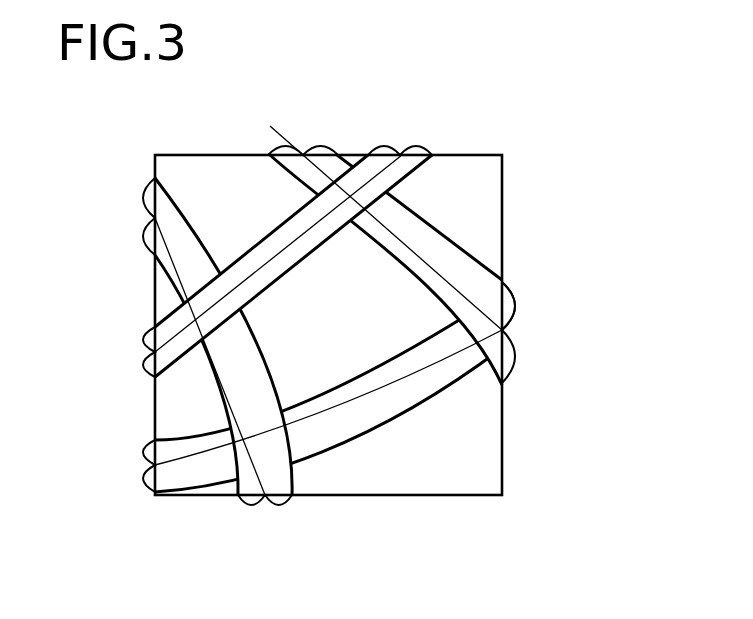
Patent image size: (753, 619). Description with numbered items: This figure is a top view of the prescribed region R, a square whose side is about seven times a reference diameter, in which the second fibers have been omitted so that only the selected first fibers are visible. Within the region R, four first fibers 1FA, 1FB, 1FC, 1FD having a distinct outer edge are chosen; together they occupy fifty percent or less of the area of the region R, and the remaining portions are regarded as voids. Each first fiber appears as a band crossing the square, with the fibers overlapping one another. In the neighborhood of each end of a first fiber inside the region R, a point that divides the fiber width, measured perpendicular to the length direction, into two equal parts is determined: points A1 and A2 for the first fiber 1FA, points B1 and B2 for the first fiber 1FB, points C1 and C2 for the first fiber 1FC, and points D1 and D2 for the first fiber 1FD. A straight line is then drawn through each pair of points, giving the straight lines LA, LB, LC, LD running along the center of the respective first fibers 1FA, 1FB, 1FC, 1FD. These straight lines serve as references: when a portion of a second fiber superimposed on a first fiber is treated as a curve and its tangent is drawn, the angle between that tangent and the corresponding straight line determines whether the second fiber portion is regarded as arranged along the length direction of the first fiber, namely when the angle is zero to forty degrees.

The prescribed region R is at (340, 126).
The first fiber 1FA is at (445, 246).
The first fiber 1FB is at (264, 247).
The first fiber 1FC is at (282, 480).
The first fiber 1FD is at (402, 395).
The straight line LA is at (502, 330).
The straight line LB is at (402, 155).
The straight line LC is at (155, 218).
The straight line LD is at (502, 330).
The point A1 is at (303, 152).
The point A2 is at (506, 335).
The point B1 is at (402, 152).
The point B2 is at (152, 352).
The point C1 is at (152, 218).
The point C2 is at (265, 500).
The point D1 is at (506, 300).
The point D2 is at (152, 464).